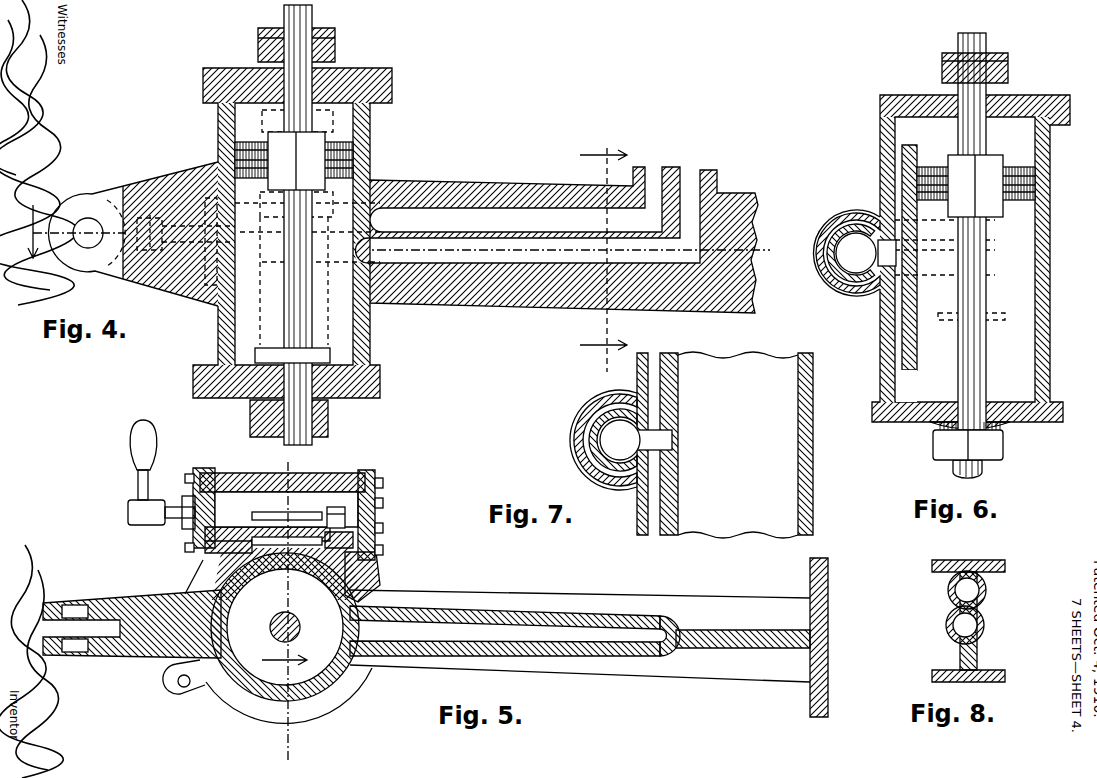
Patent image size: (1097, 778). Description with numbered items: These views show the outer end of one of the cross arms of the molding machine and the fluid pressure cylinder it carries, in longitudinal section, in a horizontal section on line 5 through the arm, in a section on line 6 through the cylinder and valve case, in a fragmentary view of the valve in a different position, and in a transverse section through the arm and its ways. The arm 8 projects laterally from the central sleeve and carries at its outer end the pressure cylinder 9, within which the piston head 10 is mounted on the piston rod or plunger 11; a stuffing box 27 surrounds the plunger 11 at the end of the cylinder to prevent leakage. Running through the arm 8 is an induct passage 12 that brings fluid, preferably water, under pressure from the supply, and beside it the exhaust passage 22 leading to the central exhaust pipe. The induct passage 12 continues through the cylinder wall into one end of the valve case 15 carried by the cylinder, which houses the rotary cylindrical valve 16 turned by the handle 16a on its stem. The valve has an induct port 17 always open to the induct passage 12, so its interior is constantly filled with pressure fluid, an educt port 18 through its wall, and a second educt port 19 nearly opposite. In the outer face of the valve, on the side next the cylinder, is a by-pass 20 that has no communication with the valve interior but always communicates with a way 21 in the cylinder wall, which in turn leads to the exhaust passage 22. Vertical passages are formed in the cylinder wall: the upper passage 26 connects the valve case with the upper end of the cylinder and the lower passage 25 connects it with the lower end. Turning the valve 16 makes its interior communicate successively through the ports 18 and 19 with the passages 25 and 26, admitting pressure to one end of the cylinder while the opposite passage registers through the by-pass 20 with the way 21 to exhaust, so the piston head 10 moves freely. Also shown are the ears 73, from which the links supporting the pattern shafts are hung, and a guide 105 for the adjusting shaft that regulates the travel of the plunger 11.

In FIG. 4, the ball bearing 5 is at (396, 233).
In FIG. 5, the nut or collar 6 is at (285, 613).
In FIG. 4, the arm 8 is at (537, 314).
In FIG. 5, the arm 8 is at (583, 670).
In FIG. 8, the arm 8 is at (962, 655).
In FIG. 4, the pressure cylinder 9 is at (218, 130).
In FIG. 5, the pressure cylinder 9 is at (248, 688).
In FIG. 4, the piston 10 is at (353, 160).
In FIG. 6, the piston 10 is at (1012, 166).
In FIG. 4, the piston rod or plunger 11 is at (292, 332).
In FIG. 5, the piston rod or plunger 11 is at (300, 628).
In FIG. 6, the piston rod or plunger 11 is at (988, 352).
In FIG. 4, the induct passage 12 is at (555, 214).
In FIG. 6, the induct passage 12 is at (958, 236).
In FIG. 8, the induct passage 12 is at (962, 592).
In FIG. 5, the valve case 15 is at (331, 476).
In FIG. 6, the valve case 15 is at (828, 226).
In FIG. 5, the rotary cylindrical valve 16 is at (229, 492).
In FIG. 6, the rotary cylindrical valve 16 is at (836, 282).
In FIG. 7, the rotary cylindrical valve 16 is at (580, 468).
In FIG. 4, the handle 16a is at (158, 214).
In FIG. 5, the handle 16a is at (137, 433).
In FIG. 5, the induct port 17 is at (345, 515).
In FIG. 5, the educt port 18 is at (280, 535).
In FIG. 6, the educt port 18 is at (853, 300).
In FIG. 7, the educt port 18 is at (624, 486).
In FIG. 6, the second educt port 19 is at (870, 219).
In FIG. 7, the second educt port 19 is at (622, 410).
In FIG. 5, the by-pass 20 is at (277, 547).
In FIG. 6, the by-pass 20 is at (870, 302).
In FIG. 7, the by-pass 20 is at (640, 441).
In FIG. 5, the way 21 is at (352, 578).
In FIG. 6, the way 21 is at (912, 258).
In FIG. 7, the way 21 is at (666, 440).
In FIG. 4, the exhaust passage 22 is at (462, 254).
In FIG. 5, the exhaust passage 22 is at (431, 620).
In FIG. 8, the exhaust passage 22 is at (962, 627).
In FIG. 4, the lower vertical passage 25 is at (330, 357).
In FIG. 6, the lower vertical passage 25 is at (896, 375).
In FIG. 4, the upper vertical passage 26 is at (370, 118).
In FIG. 6, the upper vertical passage 26 is at (896, 148).
In FIG. 4, the stuffing box 27 is at (335, 50).
In FIG. 6, the stuffing box 27 is at (1008, 60).
In FIG. 4, the ears 73 is at (142, 234).
In FIG. 5, the ears 73 is at (132, 609).
In FIG. 5, the guides 105 is at (170, 686).